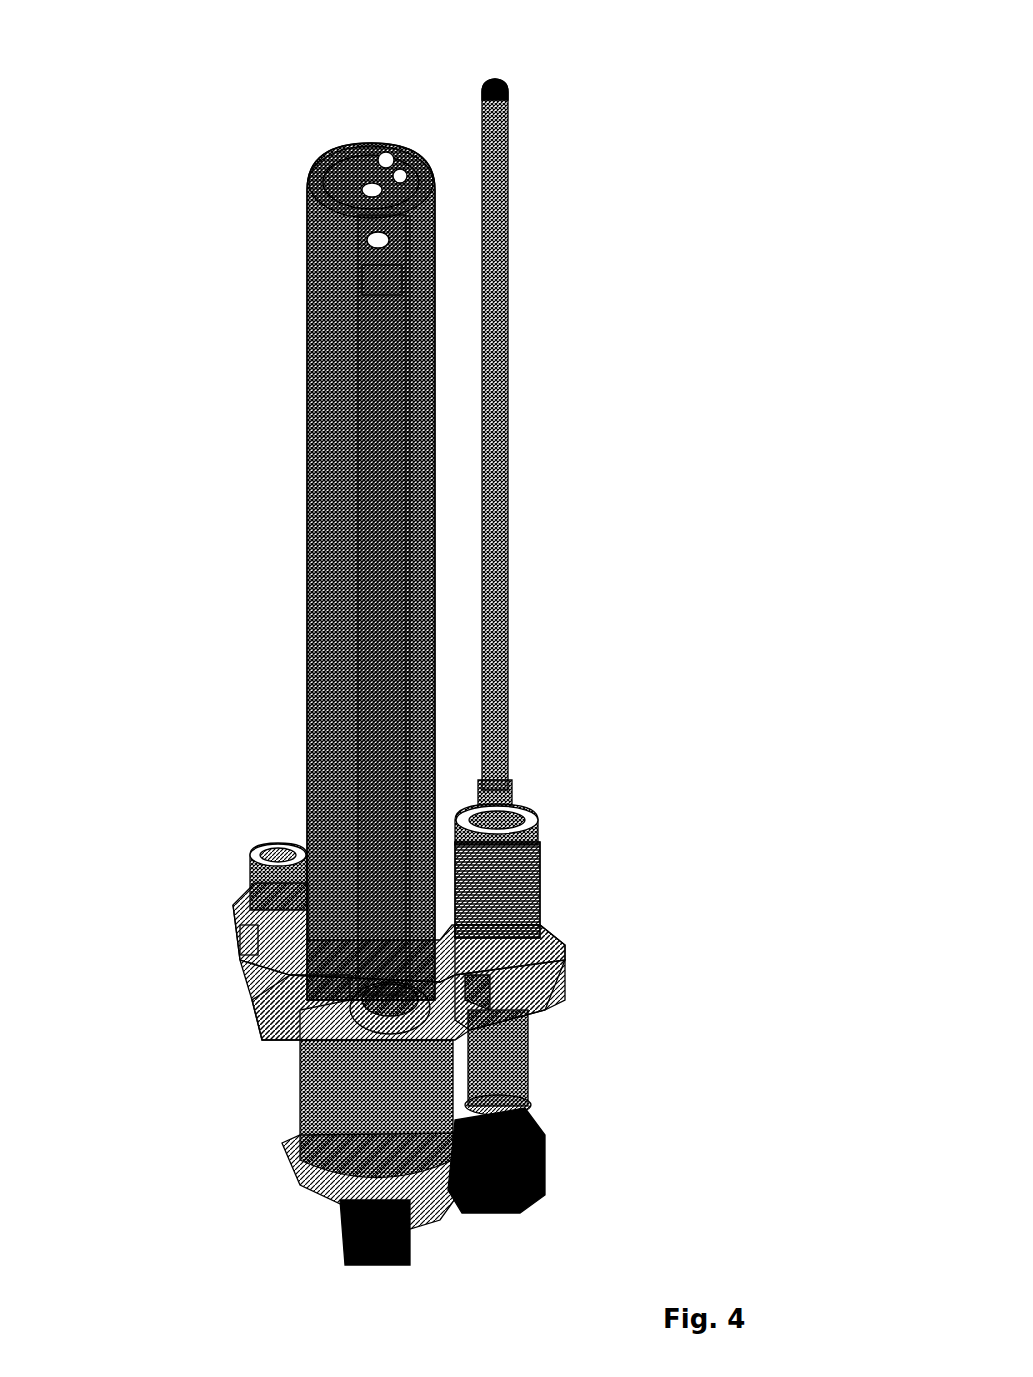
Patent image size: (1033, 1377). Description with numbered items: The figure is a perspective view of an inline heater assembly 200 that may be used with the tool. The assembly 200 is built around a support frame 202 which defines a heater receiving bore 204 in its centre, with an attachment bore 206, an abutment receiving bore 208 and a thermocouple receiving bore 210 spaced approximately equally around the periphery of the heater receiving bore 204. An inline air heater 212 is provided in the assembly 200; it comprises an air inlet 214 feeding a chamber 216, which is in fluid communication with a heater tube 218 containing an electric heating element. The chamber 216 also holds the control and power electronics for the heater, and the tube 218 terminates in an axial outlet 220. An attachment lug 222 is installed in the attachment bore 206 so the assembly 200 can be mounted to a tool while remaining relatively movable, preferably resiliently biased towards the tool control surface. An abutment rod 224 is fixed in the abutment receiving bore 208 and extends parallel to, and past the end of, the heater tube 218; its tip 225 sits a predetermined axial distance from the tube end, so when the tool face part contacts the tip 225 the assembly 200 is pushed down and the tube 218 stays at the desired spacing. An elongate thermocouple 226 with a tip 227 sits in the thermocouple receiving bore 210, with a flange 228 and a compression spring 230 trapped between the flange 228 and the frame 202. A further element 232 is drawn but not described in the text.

The inline heater assembly 200 is at (760, 348).
The support frame 202 is at (272, 1038).
The heater receiving bore 204 is at (240, 933).
The attachment bore 206 is at (240, 906).
The abutment receiving bore 208 is at (527, 1053).
The thermocouple receiving bore 210 is at (550, 945).
The inline air heater 212 is at (228, 1255).
The air inlet 214 is at (485, 1220).
The chamber 216 is at (300, 1092).
The heater tube 218 is at (310, 560).
The axial outlet 220 is at (335, 142).
The attachment lug 222 is at (253, 872).
The abutment rod 224 is at (310, 652).
The tip 225 is at (400, 142).
The elongate thermocouple 226 is at (505, 483).
The tip 227 is at (498, 78).
The flange 228 is at (537, 855).
The compression spring 230 is at (538, 908).
The ring 232 is at (518, 1113).